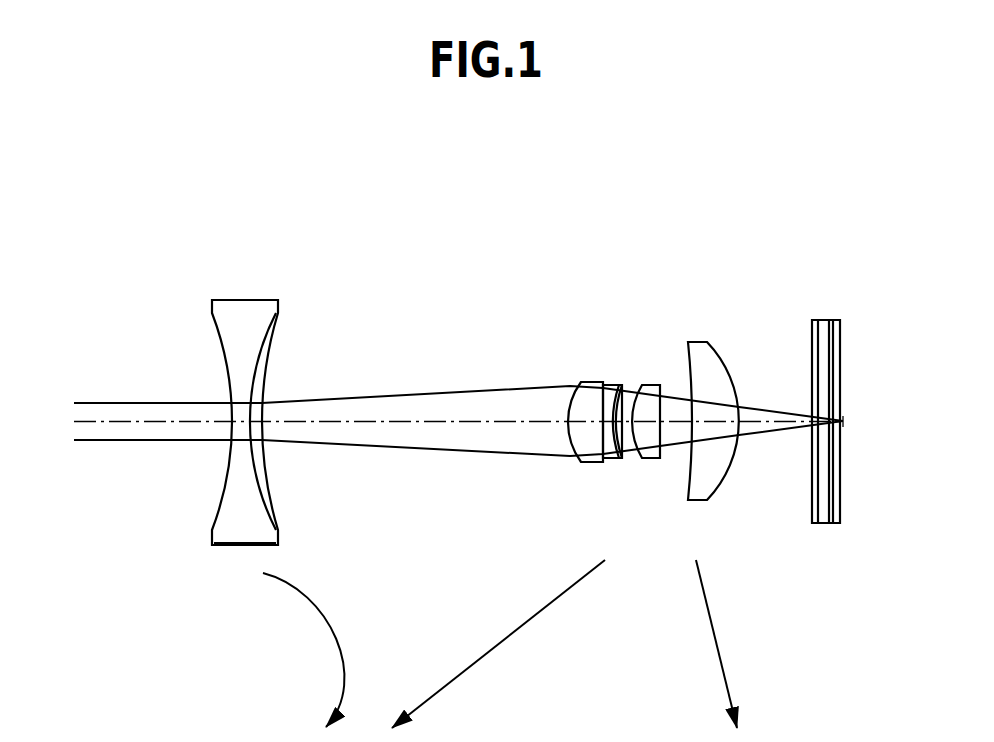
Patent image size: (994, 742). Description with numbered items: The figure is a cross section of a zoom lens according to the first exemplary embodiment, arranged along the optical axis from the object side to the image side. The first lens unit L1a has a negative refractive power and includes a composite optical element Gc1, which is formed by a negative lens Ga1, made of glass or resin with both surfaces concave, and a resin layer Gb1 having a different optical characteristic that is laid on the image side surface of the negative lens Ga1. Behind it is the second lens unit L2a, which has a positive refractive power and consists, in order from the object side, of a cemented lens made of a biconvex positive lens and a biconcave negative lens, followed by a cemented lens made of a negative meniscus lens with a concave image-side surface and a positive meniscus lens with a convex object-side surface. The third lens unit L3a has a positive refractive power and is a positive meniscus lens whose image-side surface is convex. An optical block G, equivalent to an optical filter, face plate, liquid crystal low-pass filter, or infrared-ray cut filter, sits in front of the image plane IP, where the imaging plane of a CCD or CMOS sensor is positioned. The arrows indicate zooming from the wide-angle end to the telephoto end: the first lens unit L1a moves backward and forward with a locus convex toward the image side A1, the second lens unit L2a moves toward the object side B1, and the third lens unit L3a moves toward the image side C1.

The first lens unit L1a is at (187, 293).
The composite optical element Gc1 is at (292, 303).
The resin layer Gb1 is at (262, 457).
The negative lens (lens element) Ga1 is at (228, 538).
The second lens unit L2a is at (552, 355).
The third lens unit L3a is at (735, 340).
The optical block G is at (798, 332).
The image plane IP is at (848, 477).
The locus convex towards the image side A1 is at (314, 650).
The movement towards the object side B1 is at (498, 644).
The movement towards the image side C1 is at (723, 644).